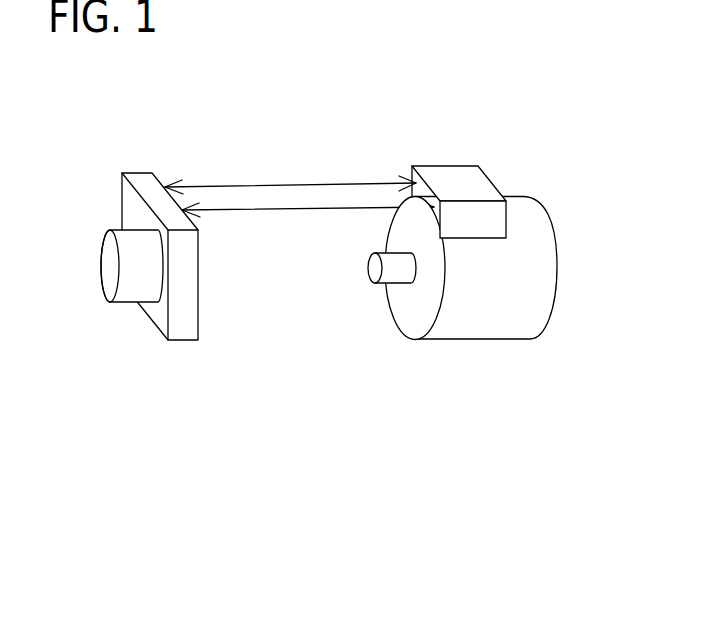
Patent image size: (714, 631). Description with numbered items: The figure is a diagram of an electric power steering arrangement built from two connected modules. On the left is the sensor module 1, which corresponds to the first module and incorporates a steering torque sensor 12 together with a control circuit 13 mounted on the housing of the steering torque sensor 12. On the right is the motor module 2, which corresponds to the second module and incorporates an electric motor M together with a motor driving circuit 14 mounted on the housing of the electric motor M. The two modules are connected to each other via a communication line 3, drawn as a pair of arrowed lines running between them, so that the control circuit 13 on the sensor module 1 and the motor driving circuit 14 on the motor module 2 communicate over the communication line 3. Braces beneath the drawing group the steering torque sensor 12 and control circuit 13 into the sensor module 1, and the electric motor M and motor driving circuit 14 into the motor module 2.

The sensor module 1 is at (139, 331).
The steering torque sensor 12 is at (110, 268).
The control circuit 13 is at (175, 323).
The communication line 3 is at (275, 176).
The motor module 2 is at (497, 327).
The electric motor M is at (473, 317).
The motor driving circuit 14 is at (475, 187).